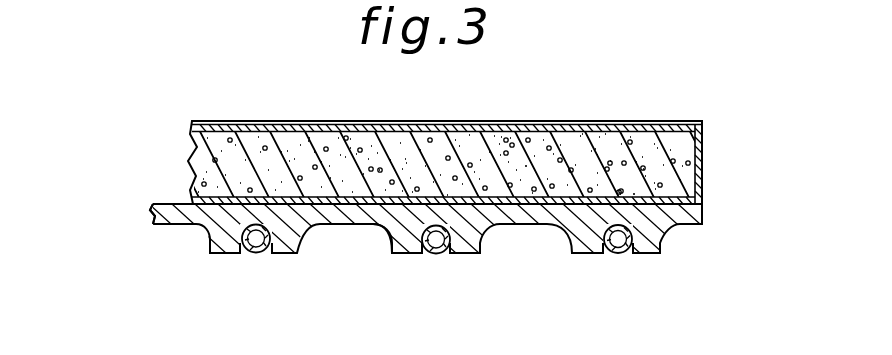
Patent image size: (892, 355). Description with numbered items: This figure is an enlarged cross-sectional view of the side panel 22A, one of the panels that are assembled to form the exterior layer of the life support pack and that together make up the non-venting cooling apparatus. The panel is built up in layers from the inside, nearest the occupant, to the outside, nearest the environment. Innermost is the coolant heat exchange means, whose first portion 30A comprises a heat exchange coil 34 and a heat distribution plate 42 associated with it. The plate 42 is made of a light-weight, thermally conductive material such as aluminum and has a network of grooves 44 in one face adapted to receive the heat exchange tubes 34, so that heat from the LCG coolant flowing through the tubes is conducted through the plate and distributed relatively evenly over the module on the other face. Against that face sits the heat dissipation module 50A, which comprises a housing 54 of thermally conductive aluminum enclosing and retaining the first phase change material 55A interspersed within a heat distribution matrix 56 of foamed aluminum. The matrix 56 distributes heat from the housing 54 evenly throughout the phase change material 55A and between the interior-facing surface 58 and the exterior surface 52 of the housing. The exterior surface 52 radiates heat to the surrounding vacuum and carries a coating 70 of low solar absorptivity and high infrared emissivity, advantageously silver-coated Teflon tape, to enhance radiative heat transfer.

The side panel 22A is at (193, 254).
The first portion of the coolant heat exchange means 30A is at (433, 248).
The heat exchange coil 34 is at (437, 255).
The heat distribution plate 42 is at (538, 218).
The grooves 44 is at (259, 252).
The heat dissipation module 50A is at (496, 145).
The exterior surface 52 is at (208, 124).
The housing 54 is at (685, 198).
The first phase change material 55A is at (398, 147).
The heat distribution matrix 56 is at (278, 143).
The interior-facing surface 58 is at (207, 230).
The coating 70 is at (538, 123).